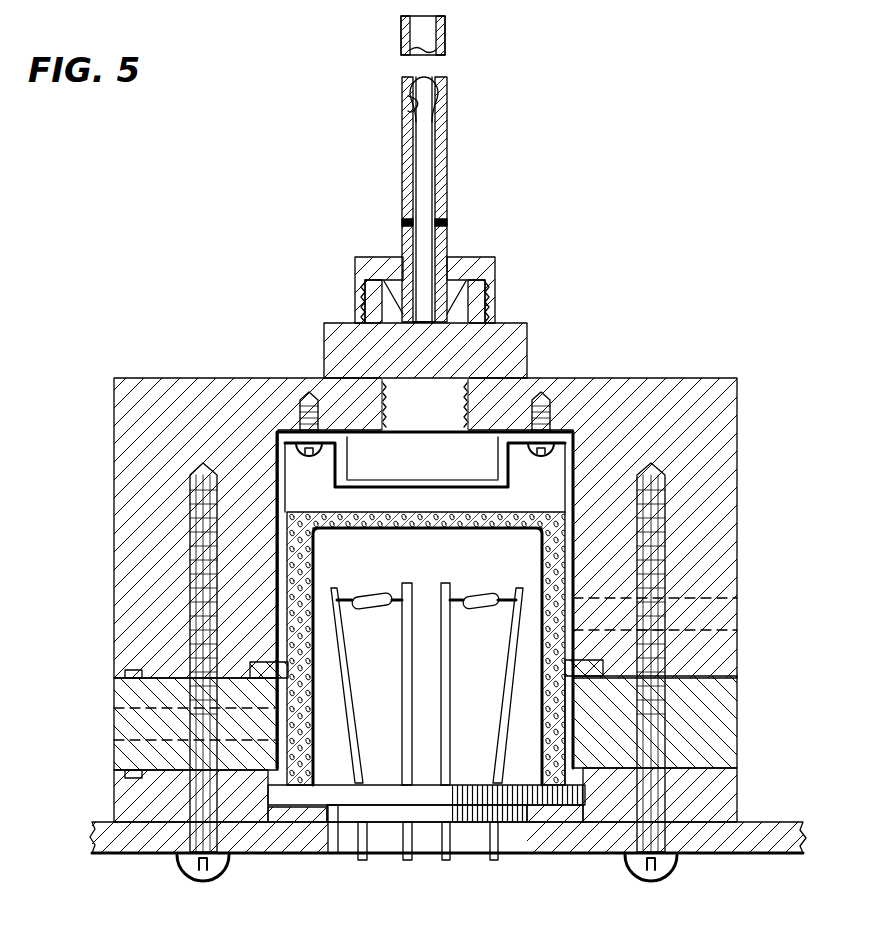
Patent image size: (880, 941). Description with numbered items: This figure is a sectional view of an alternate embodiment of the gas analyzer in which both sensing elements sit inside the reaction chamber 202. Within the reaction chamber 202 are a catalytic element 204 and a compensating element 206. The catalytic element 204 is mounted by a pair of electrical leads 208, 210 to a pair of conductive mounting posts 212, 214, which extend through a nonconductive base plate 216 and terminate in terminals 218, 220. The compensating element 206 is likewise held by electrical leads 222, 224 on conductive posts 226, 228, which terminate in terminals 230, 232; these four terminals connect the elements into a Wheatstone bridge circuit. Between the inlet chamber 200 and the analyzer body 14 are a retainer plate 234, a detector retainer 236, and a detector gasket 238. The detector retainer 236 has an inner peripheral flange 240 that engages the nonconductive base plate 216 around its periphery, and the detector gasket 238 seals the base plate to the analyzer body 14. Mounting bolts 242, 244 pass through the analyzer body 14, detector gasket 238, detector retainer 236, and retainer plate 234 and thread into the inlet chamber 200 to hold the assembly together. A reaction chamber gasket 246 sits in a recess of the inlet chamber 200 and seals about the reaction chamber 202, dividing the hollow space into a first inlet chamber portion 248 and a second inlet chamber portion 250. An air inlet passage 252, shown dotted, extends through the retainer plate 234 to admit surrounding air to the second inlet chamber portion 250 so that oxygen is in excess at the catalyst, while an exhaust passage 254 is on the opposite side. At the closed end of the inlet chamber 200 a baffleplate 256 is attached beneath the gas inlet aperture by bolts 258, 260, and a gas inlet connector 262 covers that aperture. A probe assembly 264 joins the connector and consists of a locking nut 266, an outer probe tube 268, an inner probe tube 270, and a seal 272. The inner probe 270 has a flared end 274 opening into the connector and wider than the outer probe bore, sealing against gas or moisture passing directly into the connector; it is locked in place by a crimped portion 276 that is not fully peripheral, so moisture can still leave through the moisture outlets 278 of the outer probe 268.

The analyzer body 14 is at (800, 836).
The inlet chamber 200 is at (662, 386).
The reaction chamber 202 is at (506, 512).
The catalytic element 204 is at (378, 608).
The compensating element 206 is at (488, 608).
The electrical lead 208 is at (352, 598).
The electrical lead 210 is at (397, 596).
The conductive mounting post 212 is at (348, 682).
The conductive mounting post 214 is at (402, 728).
The nonconductive base plate 216 is at (337, 800).
The terminal 218 is at (362, 860).
The terminal 220 is at (407, 862).
The electrical lead 222 is at (460, 596).
The electrical lead 224 is at (513, 594).
The conductive post 226 is at (444, 682).
The conductive post 228 is at (496, 730).
The terminal 230 is at (446, 862).
The terminal 232 is at (500, 848).
The retainer plate 234 is at (712, 720).
The detector retainer 236 is at (725, 790).
The detector gasket 238 is at (608, 852).
The inner peripheral flange 240 is at (575, 775).
The mounting bolt 242 is at (190, 487).
The mounting bolt 244 is at (668, 492).
The reaction chamber gasket 246 is at (268, 660).
The first inlet chamber portion 248 is at (572, 470).
The second inlet chamber portion 250 is at (572, 717).
The air inlet passage 252 is at (114, 712).
The exhaust passage 254 is at (705, 600).
The baffleplate 256 is at (428, 482).
The bolt 258 is at (300, 418).
The bolt 260 is at (550, 402).
The gas inlet connector 262 is at (340, 330).
The probe assembly 264 is at (458, 118).
The locking nut 266 is at (496, 258).
The outer probe tube 268 is at (401, 40).
The inner probe tube 270 is at (425, 84).
The seal 272 is at (449, 295).
The flared end 274 is at (420, 325).
The crimped portion 276 is at (404, 92).
The moisture outlets 278 is at (400, 224).